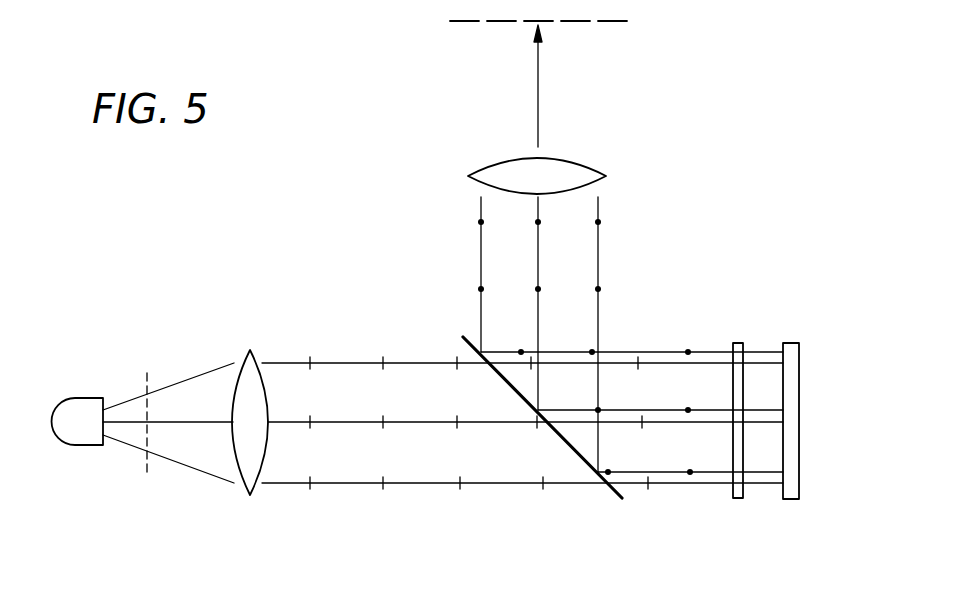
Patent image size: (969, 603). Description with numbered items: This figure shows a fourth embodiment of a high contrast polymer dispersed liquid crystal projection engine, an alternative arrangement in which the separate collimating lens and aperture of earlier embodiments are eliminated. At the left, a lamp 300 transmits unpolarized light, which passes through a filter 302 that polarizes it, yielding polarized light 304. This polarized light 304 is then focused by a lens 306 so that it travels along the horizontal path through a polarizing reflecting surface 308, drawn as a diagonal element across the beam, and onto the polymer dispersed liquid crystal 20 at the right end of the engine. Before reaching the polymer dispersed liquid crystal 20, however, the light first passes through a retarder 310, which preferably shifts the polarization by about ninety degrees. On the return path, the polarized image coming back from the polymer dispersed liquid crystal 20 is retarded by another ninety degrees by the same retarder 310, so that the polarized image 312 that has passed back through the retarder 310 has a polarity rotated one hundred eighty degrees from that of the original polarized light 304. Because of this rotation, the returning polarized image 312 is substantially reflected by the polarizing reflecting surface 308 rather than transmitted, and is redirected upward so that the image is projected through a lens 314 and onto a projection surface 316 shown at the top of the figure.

The polymer dispersed liquid crystal 20 is at (798, 342).
The lamp 300 is at (80, 397).
The filter 302 is at (156, 372).
The polarized light 304 is at (215, 367).
The lens 306 is at (257, 360).
The polarizing reflecting surface 308 is at (608, 493).
The retarder 310 is at (740, 343).
The polarized image 312 is at (655, 352).
The lens 314 is at (583, 167).
The projection surface 316 is at (613, 23).